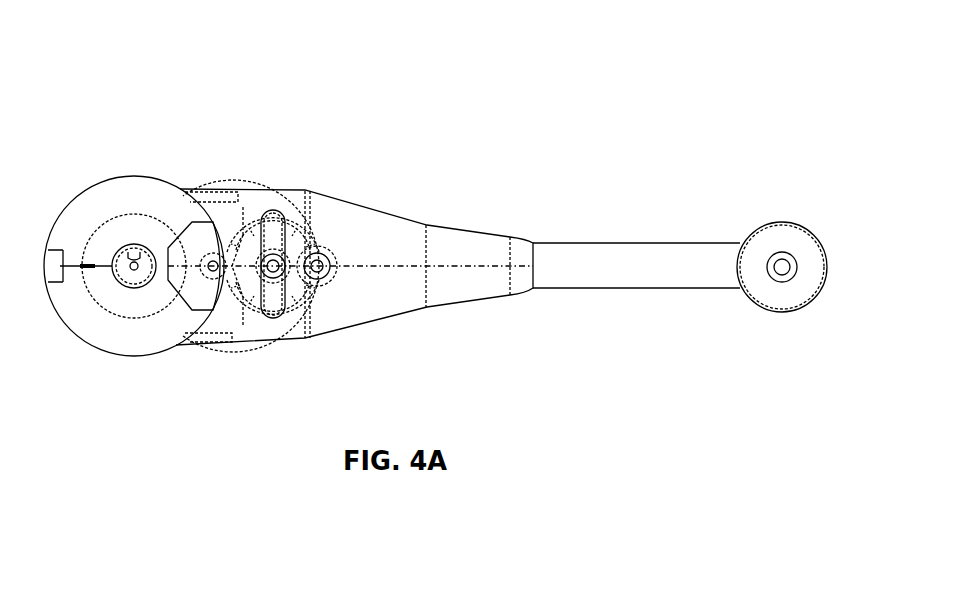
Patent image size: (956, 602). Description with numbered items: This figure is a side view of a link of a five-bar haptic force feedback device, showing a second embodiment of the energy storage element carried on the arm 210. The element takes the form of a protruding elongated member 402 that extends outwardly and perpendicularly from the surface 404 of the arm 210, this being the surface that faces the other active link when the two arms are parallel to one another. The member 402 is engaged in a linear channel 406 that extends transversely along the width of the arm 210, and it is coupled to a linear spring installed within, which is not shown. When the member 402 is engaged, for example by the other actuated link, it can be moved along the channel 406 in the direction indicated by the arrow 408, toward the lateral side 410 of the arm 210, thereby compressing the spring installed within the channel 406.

The arm 210 is at (445, 232).
The protruding elongated member 402 is at (280, 255).
The surface 404 is at (387, 236).
The linear channel 406 is at (257, 232).
The arrow 408 is at (276, 288).
The lateral side 410 is at (282, 175).